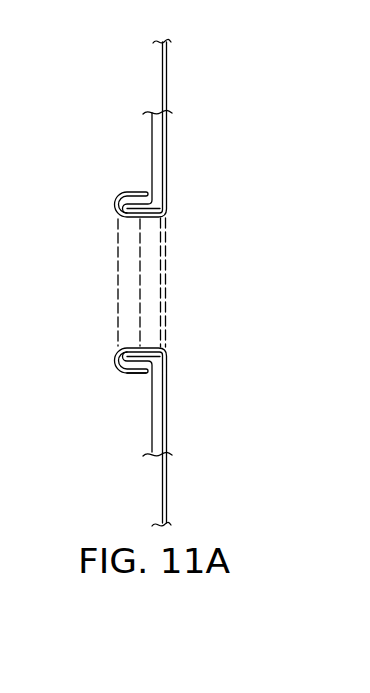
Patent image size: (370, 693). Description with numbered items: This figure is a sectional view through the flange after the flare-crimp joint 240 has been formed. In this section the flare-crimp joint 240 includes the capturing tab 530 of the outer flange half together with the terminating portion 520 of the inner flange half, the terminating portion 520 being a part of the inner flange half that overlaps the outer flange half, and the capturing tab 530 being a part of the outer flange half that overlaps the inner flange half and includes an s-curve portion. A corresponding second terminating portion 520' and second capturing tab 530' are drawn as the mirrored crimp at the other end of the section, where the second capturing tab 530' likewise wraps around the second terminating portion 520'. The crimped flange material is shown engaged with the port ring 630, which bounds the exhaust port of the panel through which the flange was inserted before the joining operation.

The flare-crimp joint 240 is at (106, 203).
The first terminating portion 520 is at (175, 128).
The first capturing tab 530 is at (179, 177).
The second terminating portion 520' is at (179, 427).
The second capturing tab 530' is at (182, 402).
The port ring 630 is at (142, 374).